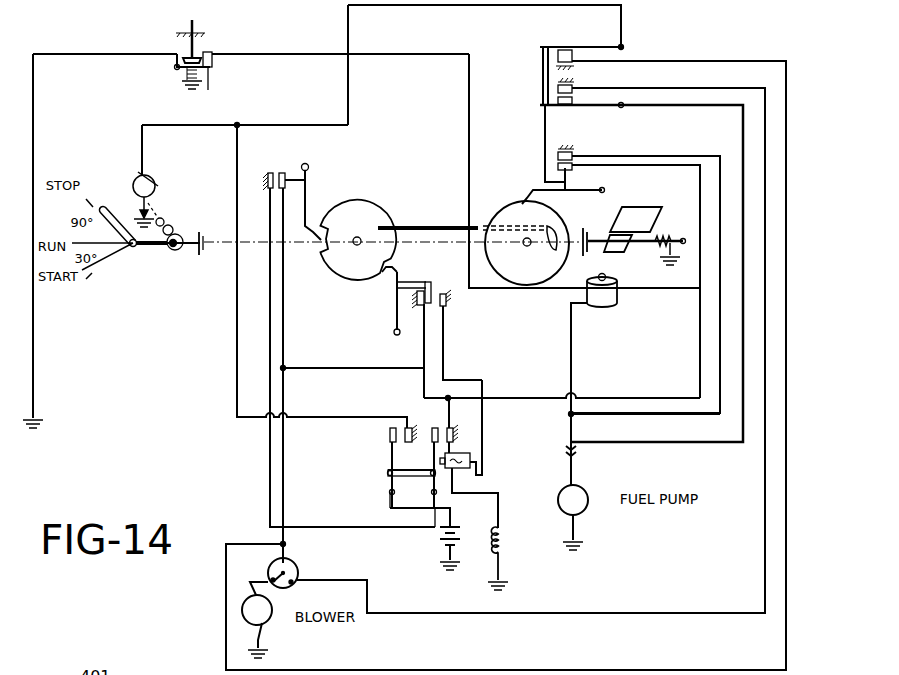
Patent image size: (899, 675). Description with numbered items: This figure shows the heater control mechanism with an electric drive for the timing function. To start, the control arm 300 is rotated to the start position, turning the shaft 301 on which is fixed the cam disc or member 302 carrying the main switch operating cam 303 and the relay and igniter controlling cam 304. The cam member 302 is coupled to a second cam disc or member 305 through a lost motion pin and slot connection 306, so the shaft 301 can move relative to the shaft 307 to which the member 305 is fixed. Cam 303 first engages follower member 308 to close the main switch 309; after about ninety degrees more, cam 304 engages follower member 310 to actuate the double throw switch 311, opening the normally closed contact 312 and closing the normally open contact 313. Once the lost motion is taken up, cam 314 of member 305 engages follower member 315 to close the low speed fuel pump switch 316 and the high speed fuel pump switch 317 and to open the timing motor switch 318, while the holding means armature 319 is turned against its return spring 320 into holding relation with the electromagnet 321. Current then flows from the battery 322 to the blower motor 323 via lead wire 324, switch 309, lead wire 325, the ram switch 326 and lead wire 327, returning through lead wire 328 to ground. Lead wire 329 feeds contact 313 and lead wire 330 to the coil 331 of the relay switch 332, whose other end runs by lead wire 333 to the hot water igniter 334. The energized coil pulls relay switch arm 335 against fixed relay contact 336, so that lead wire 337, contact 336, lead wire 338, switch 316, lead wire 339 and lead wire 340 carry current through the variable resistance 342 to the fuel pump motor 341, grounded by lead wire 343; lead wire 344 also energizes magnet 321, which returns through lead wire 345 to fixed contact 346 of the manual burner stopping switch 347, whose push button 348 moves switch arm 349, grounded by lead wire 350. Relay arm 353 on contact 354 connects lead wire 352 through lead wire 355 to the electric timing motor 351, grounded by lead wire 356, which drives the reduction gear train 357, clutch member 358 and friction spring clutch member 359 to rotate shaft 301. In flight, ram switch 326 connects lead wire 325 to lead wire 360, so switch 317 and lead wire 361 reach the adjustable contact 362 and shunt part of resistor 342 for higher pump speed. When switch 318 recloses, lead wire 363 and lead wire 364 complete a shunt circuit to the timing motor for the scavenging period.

The control arm 300 is at (104, 210).
The shaft 301 is at (160, 248).
The cam disc or member 302 is at (366, 200).
The main switch operating cam 303 is at (318, 230).
The relay and igniter controlling cam 304 is at (344, 278).
The cam disc or member 305 is at (512, 197).
The lost motion pin and slot connection 306 is at (560, 226).
The shaft 307 is at (645, 246).
The follower member 308 is at (307, 172).
The main switch 309 is at (278, 164).
The follower member 310 is at (395, 312).
The double throw switch 311 is at (435, 277).
The normally closed contact 312 is at (419, 312).
The normally open contact 313 is at (449, 303).
The cam 314 is at (568, 252).
The follower member 315 is at (590, 189).
The low speed fuel pump switch 316 is at (582, 156).
The high speed fuel pump switch 317 is at (567, 108).
The timing motor switch 318 is at (565, 44).
The holding means armature 319 is at (645, 206).
The return spring 320 is at (670, 235).
The electromagnet 321 is at (618, 296).
The battery or source of current supply 322 is at (438, 536).
The combustion air blower motor 323 is at (272, 604).
The lead wire 324 is at (268, 448).
The lead wire 325 is at (284, 340).
The combustion air pressure responsive or ram switch 326 is at (296, 560).
The lead wire 327 is at (250, 578).
The lead wire 328 is at (262, 644).
The lead wire 329 is at (314, 367).
The lead wire 330 is at (485, 432).
The coil 331 is at (456, 452).
The relay switch 332 is at (374, 463).
The lead wire 333 is at (500, 492).
The hot water igniter 334 is at (503, 548).
The relay switch arm 335 is at (430, 434).
The fixed relay contact 336 is at (456, 428).
The lead wire 337 is at (430, 504).
The lead wire 338 is at (614, 398).
The lead wire 339 is at (718, 318).
The lead wire 340 is at (566, 414).
The fuel pump motor 341 is at (588, 494).
The variable resistance 342 is at (566, 448).
The lead wire 343 is at (584, 540).
The lead wire 344 is at (576, 350).
The lead wire 345 is at (500, 292).
The fixed contact 346 is at (213, 52).
The manual burner stopping switch 347 is at (223, 81).
The operating rod or push button 348 is at (191, 24).
The switch arm 349 is at (205, 72).
The lead wire 350 is at (118, 66).
The electric timing motor 351 is at (137, 176).
The lead wire 352 is at (388, 500).
The relay switch arm 353 is at (388, 437).
The switch contact 354 is at (404, 426).
The lead wire 355 is at (186, 127).
The lead wire 356 is at (141, 206).
The reduction gear train 357 is at (171, 208).
The clutch member 358 is at (176, 232).
The friction spring clutch member 359 is at (178, 252).
The lead wire 360 is at (688, 88).
The lead wire 361 is at (720, 107).
The adjustable contact 362 is at (582, 444).
The lead wire 363 is at (736, 61).
The lead wire 364 is at (504, 6).